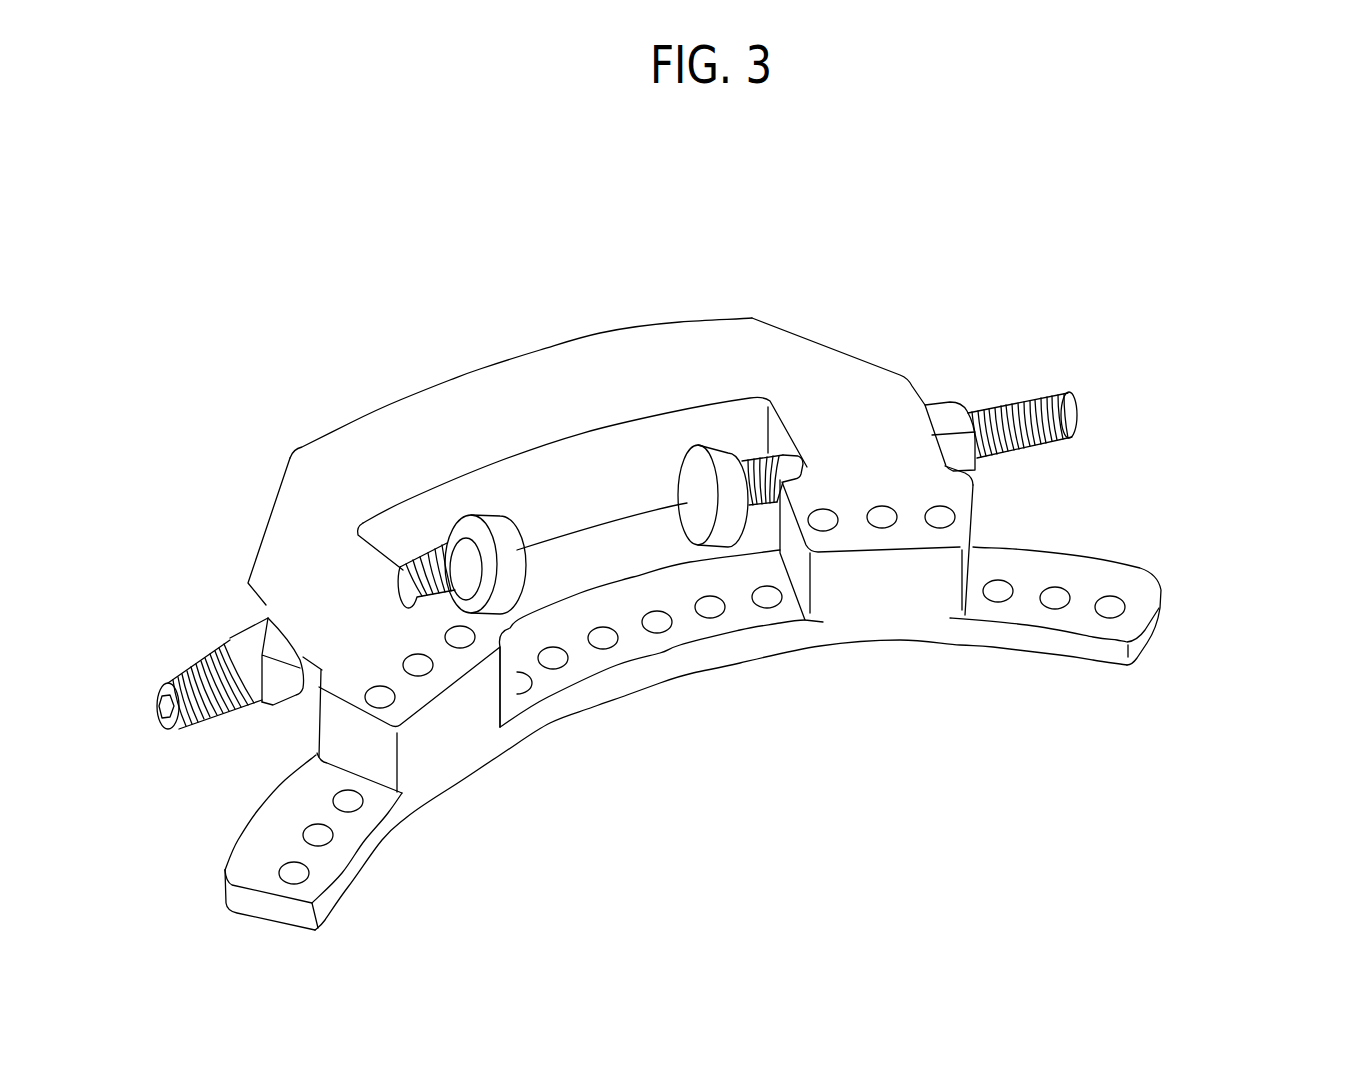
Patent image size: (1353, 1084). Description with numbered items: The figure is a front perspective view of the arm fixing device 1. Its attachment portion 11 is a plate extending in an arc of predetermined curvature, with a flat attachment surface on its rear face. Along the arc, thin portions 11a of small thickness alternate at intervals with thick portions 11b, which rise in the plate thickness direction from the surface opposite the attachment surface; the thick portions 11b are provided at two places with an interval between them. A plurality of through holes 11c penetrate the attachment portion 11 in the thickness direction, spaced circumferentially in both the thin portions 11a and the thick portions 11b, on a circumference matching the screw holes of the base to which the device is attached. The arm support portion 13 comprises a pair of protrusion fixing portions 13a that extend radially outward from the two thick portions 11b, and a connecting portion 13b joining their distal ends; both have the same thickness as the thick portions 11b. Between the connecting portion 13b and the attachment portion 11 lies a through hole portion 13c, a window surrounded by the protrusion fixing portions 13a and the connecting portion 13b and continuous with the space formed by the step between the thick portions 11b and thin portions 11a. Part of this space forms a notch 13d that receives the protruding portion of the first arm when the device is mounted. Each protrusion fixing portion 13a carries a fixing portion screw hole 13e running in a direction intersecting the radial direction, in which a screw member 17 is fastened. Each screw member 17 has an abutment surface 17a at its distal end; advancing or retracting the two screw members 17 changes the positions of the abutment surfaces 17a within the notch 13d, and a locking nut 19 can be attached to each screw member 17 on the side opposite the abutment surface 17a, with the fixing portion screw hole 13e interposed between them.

The arm fixing device 1 is at (373, 218).
The attachment portion 11 is at (1166, 657).
The thin portions 11a is at (363, 853).
The thick portions 11b is at (450, 743).
The through holes 11c is at (823, 518).
The arm support portion 13 is at (307, 422).
The protrusion fixing portions 13a is at (313, 622).
The connecting portion 13b is at (540, 385).
The through hole portion 13c is at (607, 477).
The notch 13d is at (688, 625).
The fixing portion screw holes 13e is at (787, 427).
The screw members 17 is at (408, 565).
The abutment surface 17a is at (502, 512).
The locking nut 19 is at (248, 640).